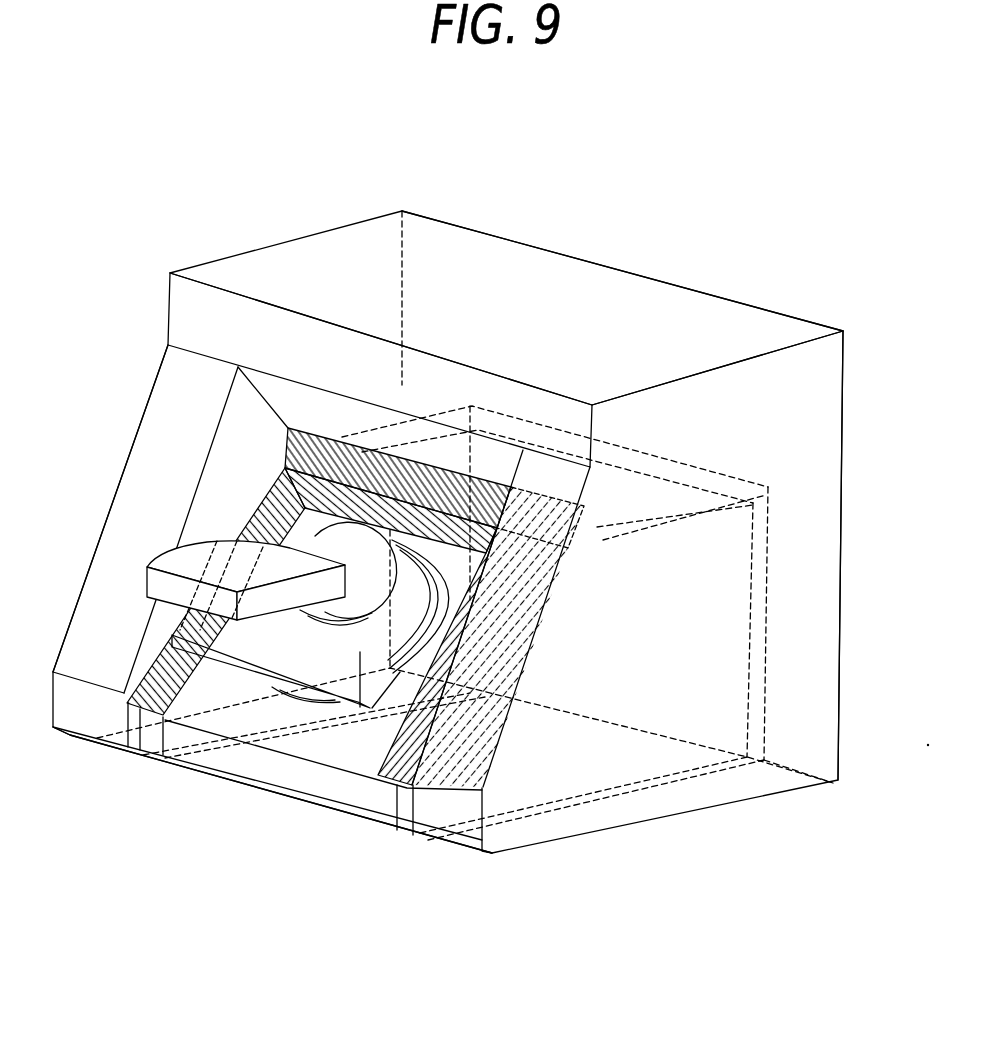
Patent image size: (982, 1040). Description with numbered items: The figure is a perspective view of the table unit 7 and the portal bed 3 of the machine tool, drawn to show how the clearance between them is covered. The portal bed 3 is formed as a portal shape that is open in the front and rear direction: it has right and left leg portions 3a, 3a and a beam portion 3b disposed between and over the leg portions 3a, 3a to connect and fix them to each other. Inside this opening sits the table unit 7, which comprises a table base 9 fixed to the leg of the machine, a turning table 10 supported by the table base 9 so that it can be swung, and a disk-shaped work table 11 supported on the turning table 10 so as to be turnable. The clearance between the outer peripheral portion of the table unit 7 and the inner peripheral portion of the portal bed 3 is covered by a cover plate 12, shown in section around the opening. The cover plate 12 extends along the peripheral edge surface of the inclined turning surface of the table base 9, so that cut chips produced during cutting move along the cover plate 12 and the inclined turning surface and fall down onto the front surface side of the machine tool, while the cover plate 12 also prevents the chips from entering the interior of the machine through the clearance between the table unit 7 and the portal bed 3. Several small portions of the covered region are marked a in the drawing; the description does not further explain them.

The portal bed 3 is at (543, 241).
The leg portion 3a is at (128, 470).
The beam portion 3b is at (617, 278).
The table unit 7 is at (248, 792).
The table base 9 is at (293, 806).
The turning table 10 is at (420, 588).
The work table 11 is at (145, 575).
The cover plate 12 is at (375, 490).
The leg portion a is at (498, 492).